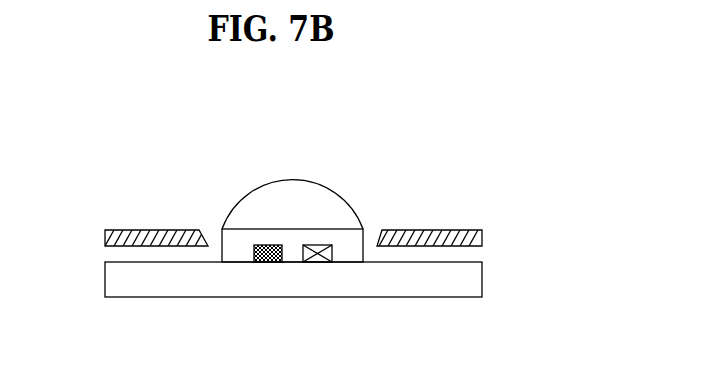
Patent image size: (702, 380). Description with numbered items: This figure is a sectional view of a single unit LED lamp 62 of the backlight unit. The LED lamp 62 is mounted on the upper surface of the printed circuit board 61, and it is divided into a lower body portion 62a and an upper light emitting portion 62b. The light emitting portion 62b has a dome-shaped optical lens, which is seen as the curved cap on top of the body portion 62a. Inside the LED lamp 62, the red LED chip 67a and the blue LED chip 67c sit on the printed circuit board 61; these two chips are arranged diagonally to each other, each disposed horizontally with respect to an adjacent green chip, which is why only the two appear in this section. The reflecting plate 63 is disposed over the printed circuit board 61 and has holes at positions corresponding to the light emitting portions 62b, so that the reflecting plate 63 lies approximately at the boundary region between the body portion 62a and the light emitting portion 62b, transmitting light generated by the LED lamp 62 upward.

The printed circuit board 61 is at (473, 275).
The LED lamp 62 is at (292, 176).
The body portion 62a is at (241, 238).
The light emitting portion 62b is at (227, 128).
The reflecting plate 63 is at (483, 236).
The red LED chip 67a is at (265, 262).
The blue LED chip 67c is at (312, 262).